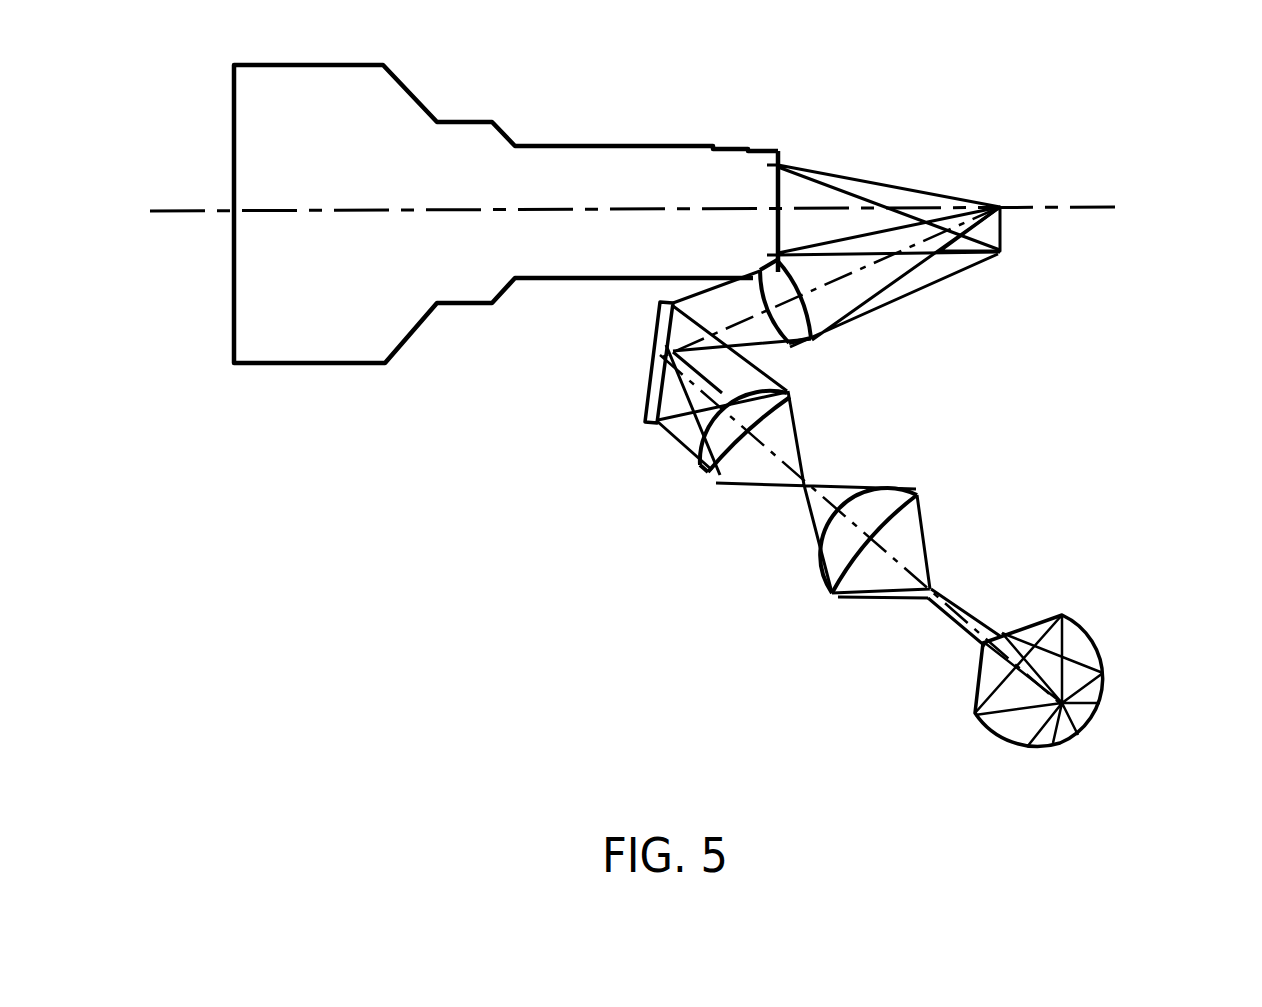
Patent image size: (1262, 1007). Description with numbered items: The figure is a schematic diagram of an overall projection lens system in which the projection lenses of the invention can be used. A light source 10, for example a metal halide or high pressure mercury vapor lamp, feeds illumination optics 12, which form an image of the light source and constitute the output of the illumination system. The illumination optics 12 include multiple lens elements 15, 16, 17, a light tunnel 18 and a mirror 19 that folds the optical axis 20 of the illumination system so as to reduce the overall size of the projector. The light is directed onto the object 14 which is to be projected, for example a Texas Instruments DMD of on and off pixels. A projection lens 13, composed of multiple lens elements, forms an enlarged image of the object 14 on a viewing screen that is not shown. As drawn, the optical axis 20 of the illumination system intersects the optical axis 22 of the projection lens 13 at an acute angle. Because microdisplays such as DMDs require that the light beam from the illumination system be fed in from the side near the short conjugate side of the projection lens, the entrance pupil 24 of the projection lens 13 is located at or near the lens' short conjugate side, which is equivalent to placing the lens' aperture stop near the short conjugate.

The light source 10 is at (1100, 668).
The illumination optics 12 is at (884, 426).
The projection lens 13 is at (352, 312).
The object 14 is at (1003, 234).
The lens element 15 is at (880, 508).
The lens element 16 is at (705, 468).
The lens element 17 is at (787, 320).
The light tunnel 18 is at (948, 608).
The mirror 19 is at (652, 342).
The optical axis of the illumination system 20 is at (752, 482).
The optical axis of projection lens 22 is at (460, 213).
The entrance pupil 24 is at (777, 167).